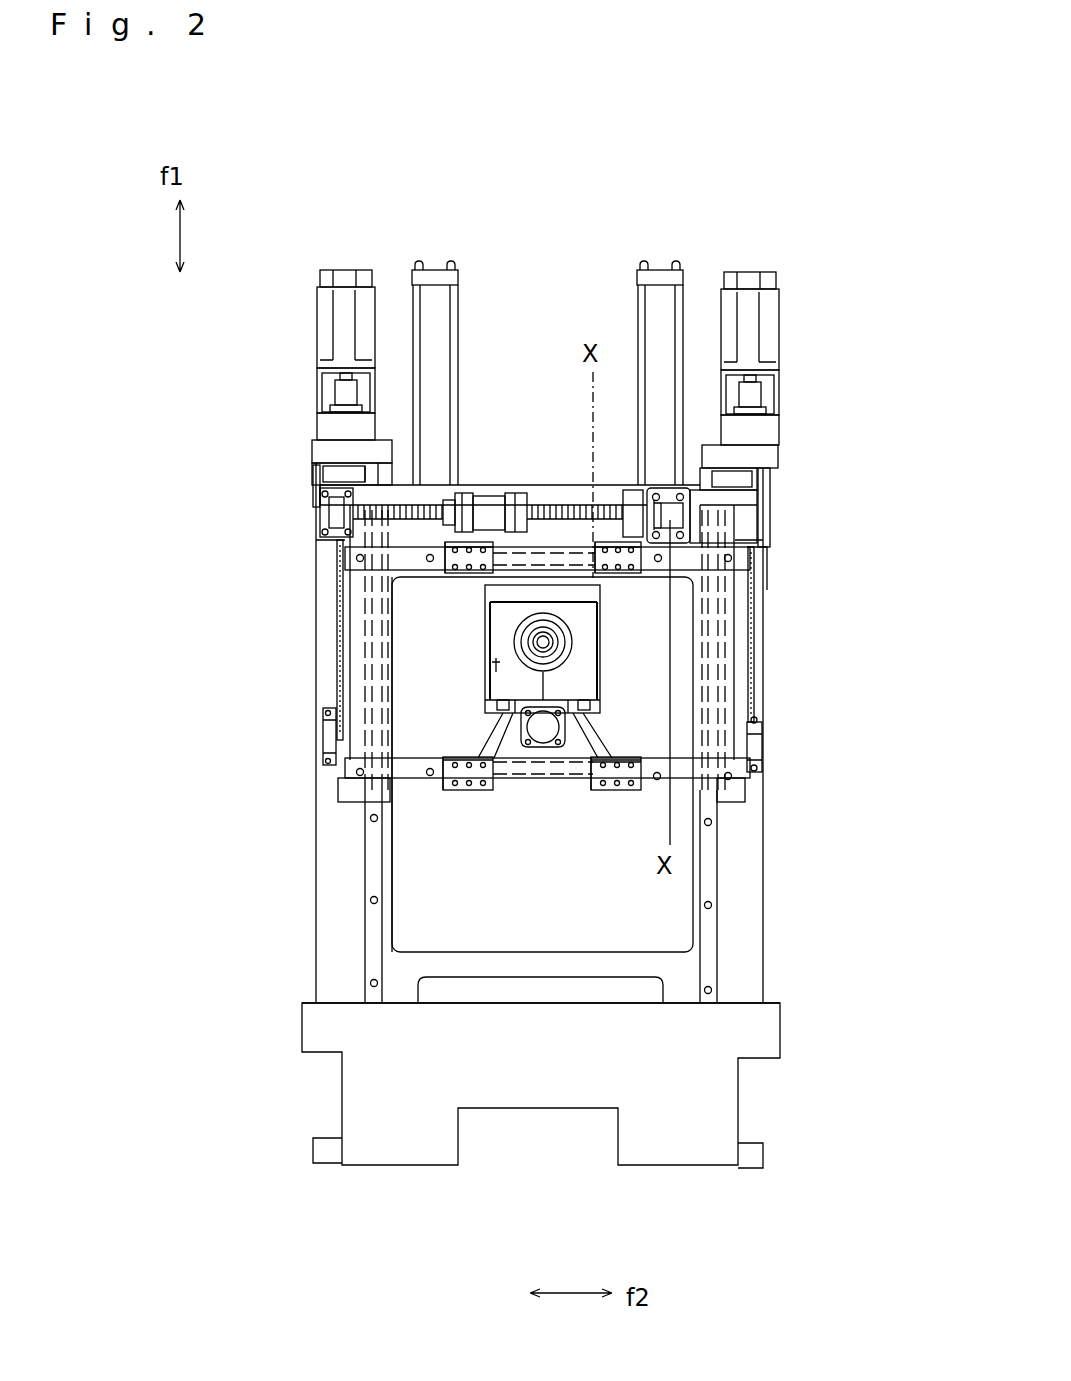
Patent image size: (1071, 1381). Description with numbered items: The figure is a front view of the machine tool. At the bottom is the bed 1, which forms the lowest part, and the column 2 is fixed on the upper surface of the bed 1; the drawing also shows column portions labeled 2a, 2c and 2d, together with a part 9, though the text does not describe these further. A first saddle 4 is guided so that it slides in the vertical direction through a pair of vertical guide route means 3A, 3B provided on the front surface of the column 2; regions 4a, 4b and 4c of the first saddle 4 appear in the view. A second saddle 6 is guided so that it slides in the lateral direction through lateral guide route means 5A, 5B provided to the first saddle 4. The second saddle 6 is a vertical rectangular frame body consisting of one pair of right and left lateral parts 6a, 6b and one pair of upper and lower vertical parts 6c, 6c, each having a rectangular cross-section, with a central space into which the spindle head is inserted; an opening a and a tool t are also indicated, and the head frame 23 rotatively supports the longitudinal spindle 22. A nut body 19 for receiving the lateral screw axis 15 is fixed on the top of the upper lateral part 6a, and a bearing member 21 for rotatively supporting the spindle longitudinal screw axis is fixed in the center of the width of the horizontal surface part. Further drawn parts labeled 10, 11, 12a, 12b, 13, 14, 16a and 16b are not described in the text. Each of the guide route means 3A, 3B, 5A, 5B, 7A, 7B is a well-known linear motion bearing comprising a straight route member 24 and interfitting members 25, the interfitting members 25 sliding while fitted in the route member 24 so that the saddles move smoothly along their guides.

The bed 1 is at (402, 1150).
The column 2 is at (779, 644).
The frame column 2a is at (335, 872).
The frame slot 2c is at (528, 967).
The frame top block 2d is at (314, 452).
The vertical guide route means 3A is at (236, 800).
The vertical guide route means 3B is at (862, 814).
The first saddle 4 is at (345, 644).
The top bar 4a is at (546, 486).
The lower slide plate 4b is at (490, 790).
The rack 4c is at (342, 615).
The lateral guide route means 5A is at (544, 275).
The lateral guide route means 5B is at (616, 866).
The second saddle 6 is at (452, 673).
The lateral part 6a is at (576, 540).
The lateral part 6b is at (520, 790).
The vertical part 6c is at (449, 611).
The guide route means 7A is at (464, 858).
The guide route means 7B is at (552, 853).
The base plate 9 is at (585, 1003).
The cylinder 10 is at (342, 278).
The guide rail 11 is at (350, 674).
The upper bearing block 12a is at (352, 475).
The lower bearing block 12b is at (322, 734).
The side plate 13 is at (316, 476).
The motor bracket 14 is at (720, 495).
The lateral screw axis 15 is at (562, 540).
The screw bearing 16a is at (630, 498).
The screw bearing 16b is at (330, 515).
The nut body 19 is at (492, 500).
The bearing member 21 is at (542, 692).
The spindle 22 is at (548, 642).
The head frame 23 is at (492, 607).
The route member 24 is at (436, 546).
The interfitting members 25 is at (470, 550).
The opening a is at (404, 915).
The tool t is at (497, 674).